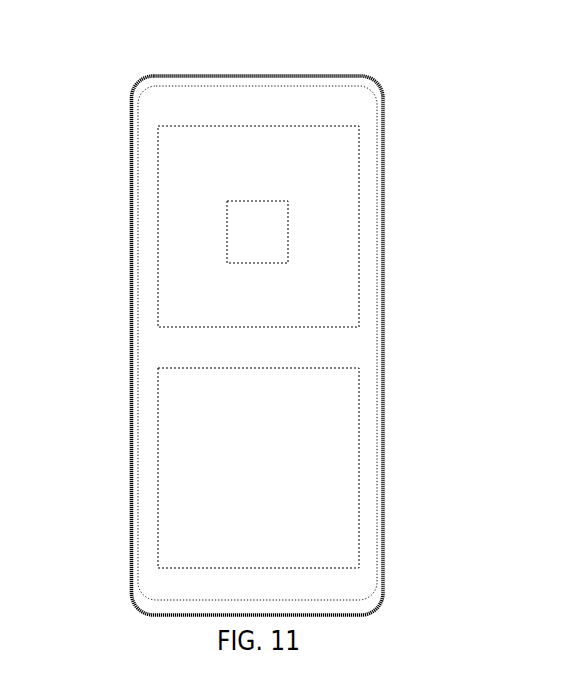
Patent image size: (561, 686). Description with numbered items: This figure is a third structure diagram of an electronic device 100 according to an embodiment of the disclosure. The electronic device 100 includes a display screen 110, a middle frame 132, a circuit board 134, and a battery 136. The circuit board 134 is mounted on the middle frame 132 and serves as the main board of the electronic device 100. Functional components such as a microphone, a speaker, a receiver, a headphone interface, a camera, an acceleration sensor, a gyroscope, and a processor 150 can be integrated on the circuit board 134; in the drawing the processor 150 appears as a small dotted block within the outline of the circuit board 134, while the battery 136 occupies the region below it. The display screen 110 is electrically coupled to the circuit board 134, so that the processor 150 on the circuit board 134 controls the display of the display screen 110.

The electronic device 100 is at (173, 30).
The display screen 110 is at (183, 115).
The middle frame 132 is at (386, 170).
The circuit board 134 is at (158, 228).
The battery 136 is at (158, 463).
The processor 150 is at (290, 222).